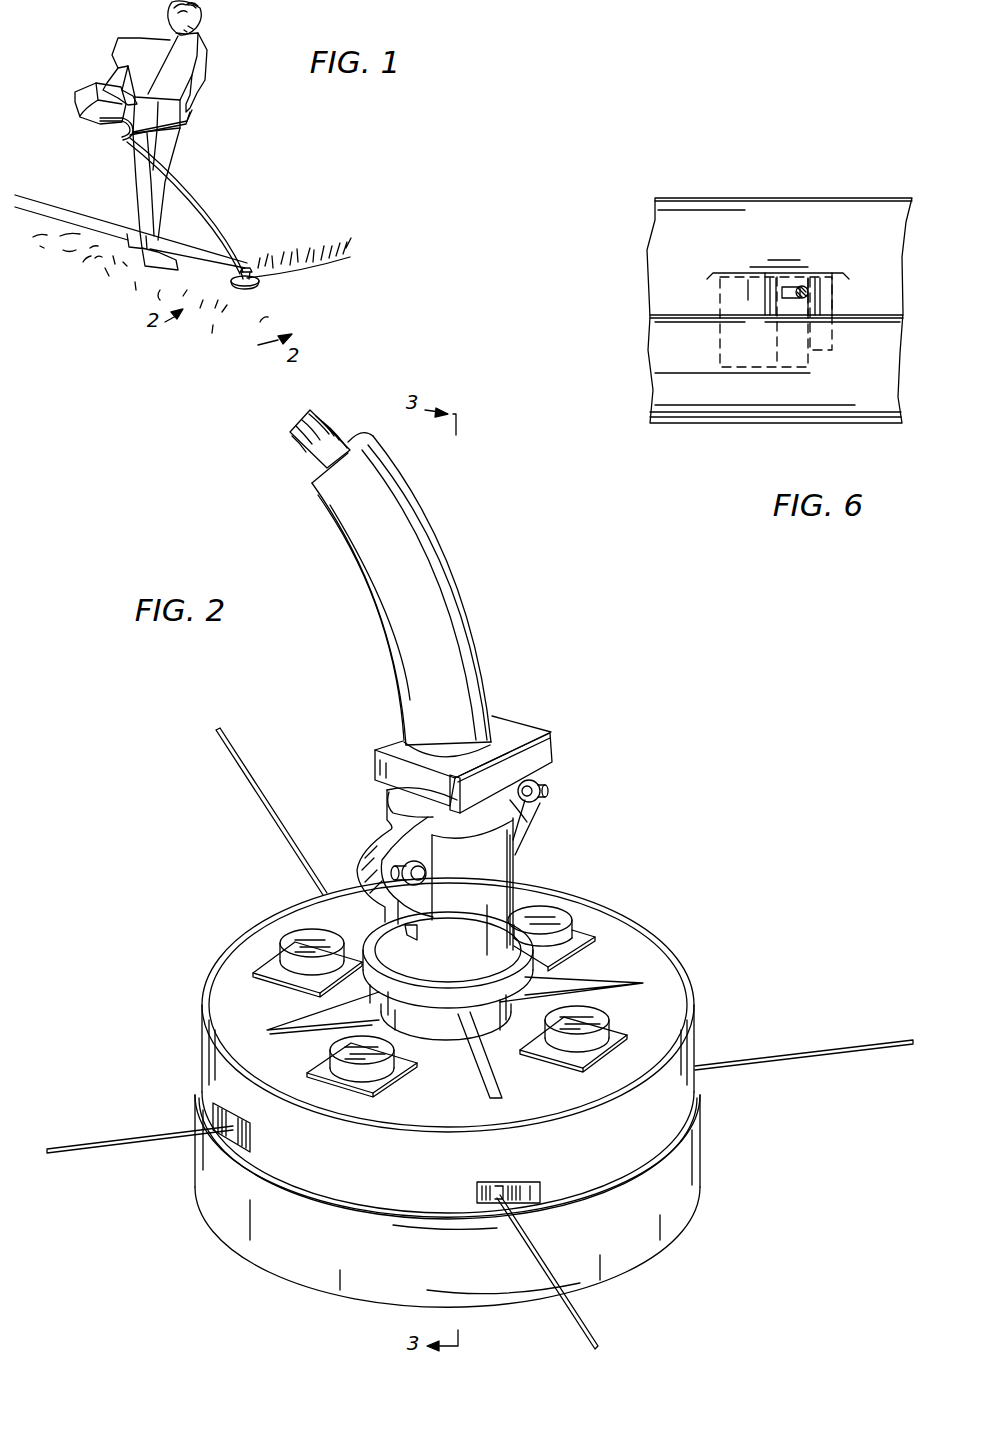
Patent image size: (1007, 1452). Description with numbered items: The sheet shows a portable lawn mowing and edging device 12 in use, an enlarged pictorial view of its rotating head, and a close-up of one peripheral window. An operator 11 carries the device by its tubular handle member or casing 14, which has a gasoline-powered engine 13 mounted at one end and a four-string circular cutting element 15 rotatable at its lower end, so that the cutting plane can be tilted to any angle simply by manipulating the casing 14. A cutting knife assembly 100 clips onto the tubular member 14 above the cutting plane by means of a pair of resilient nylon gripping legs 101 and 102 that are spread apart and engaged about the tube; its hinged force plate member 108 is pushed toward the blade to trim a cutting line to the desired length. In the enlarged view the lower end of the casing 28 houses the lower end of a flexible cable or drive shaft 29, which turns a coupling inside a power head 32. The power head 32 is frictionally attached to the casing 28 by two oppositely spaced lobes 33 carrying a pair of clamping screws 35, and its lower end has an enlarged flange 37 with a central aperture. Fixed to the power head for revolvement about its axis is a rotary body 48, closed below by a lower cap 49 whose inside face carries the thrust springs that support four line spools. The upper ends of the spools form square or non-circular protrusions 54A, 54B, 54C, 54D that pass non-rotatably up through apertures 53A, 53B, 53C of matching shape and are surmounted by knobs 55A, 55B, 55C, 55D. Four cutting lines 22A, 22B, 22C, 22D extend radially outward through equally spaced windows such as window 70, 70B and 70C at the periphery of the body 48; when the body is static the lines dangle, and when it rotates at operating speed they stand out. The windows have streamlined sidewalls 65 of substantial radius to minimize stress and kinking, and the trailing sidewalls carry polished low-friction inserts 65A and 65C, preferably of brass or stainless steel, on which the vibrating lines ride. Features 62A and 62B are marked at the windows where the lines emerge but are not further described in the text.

In FIG. 1, the operator 11 is at (229, 44).
In FIG. 1, the portable lawn mowing and edging device 12 is at (203, 161).
In FIG. 1, the gasoline-powered engine 13 is at (97, 128).
In FIG. 1, the tubular handle member or casing 14 is at (208, 194).
In FIG. 1, the cutting element 15 is at (243, 294).
In FIG. 2, the cutting element 15 is at (753, 892).
In FIG. 1, the cutting knife assembly 100 is at (255, 272).
In FIG. 2, the cutting knife assembly 100 is at (545, 708).
In FIG. 2, the gripping leg 101 is at (372, 770).
In FIG. 2, the gripping leg 102 is at (492, 714).
In FIG. 2, the force plate member 108 is at (565, 770).
In FIG. 2, the casing 28 is at (420, 510).
In FIG. 2, the flexible cable or drive shaft 29 is at (290, 440).
In FIG. 2, the power head 32 is at (500, 882).
In FIG. 2, the lobes 33 is at (392, 858).
In FIG. 2, the clamping screws 35 is at (424, 874).
In FIG. 2, the enlarged flange 37 is at (447, 985).
In FIG. 6, the rotary body 48 is at (690, 200).
In FIG. 2, the rotary body 48 is at (675, 980).
In FIG. 6, the lower cap 49 is at (757, 418).
In FIG. 2, the lower cap 49 is at (700, 1165).
In FIG. 2, the aperture 53A is at (592, 950).
In FIG. 2, the aperture 53B is at (612, 1062).
In FIG. 2, the aperture 53C is at (385, 1088).
In FIG. 2, the protrusion 54A is at (588, 935).
In FIG. 2, the protrusion 54B is at (630, 1033).
In FIG. 2, the protrusion 54C is at (405, 1060).
In FIG. 2, the protrusion 54D is at (270, 960).
In FIG. 2, the knob 55A is at (553, 913).
In FIG. 2, the knob 55B is at (600, 1013).
In FIG. 2, the knob 55C is at (350, 1055).
In FIG. 2, the knob 55D is at (300, 930).
In FIG. 6, the cutting line 22A is at (810, 293).
In FIG. 2, the cutting line 22A is at (892, 1040).
In FIG. 2, the cutting line 22B is at (600, 1331).
In FIG. 2, the cutting line 22C is at (85, 1143).
In FIG. 2, the cutting line 22D is at (228, 745).
In FIG. 6, the line slot 62A is at (783, 283).
In FIG. 2, the line slot 62B is at (492, 1182).
In FIG. 6, the sidewalls 65 is at (738, 278).
In FIG. 2, the sidewalls 65 is at (210, 1120).
In FIG. 6, the insert 65A is at (826, 303).
In FIG. 2, the insert 65C is at (228, 1133).
In FIG. 6, the window 70 is at (802, 258).
In FIG. 2, the window 70B is at (519, 1182).
In FIG. 2, the window 70C is at (240, 1112).